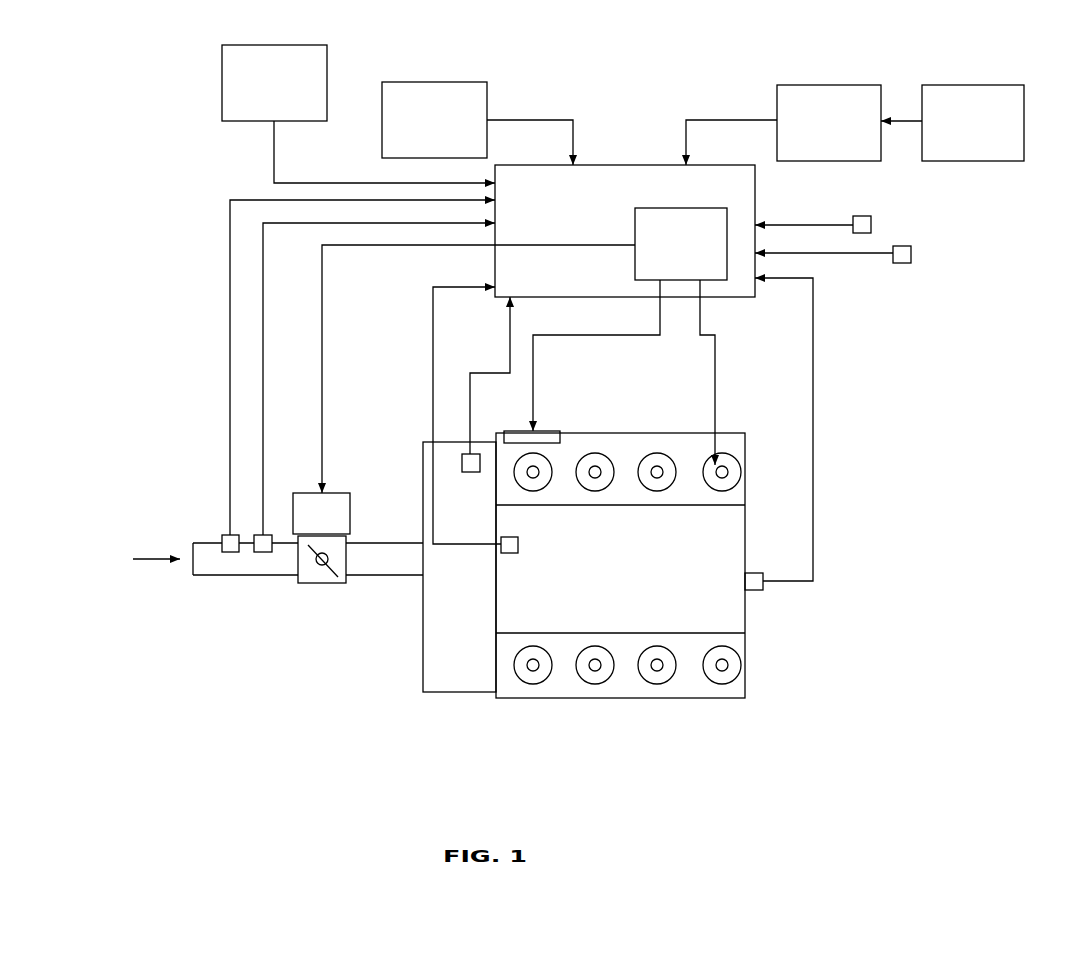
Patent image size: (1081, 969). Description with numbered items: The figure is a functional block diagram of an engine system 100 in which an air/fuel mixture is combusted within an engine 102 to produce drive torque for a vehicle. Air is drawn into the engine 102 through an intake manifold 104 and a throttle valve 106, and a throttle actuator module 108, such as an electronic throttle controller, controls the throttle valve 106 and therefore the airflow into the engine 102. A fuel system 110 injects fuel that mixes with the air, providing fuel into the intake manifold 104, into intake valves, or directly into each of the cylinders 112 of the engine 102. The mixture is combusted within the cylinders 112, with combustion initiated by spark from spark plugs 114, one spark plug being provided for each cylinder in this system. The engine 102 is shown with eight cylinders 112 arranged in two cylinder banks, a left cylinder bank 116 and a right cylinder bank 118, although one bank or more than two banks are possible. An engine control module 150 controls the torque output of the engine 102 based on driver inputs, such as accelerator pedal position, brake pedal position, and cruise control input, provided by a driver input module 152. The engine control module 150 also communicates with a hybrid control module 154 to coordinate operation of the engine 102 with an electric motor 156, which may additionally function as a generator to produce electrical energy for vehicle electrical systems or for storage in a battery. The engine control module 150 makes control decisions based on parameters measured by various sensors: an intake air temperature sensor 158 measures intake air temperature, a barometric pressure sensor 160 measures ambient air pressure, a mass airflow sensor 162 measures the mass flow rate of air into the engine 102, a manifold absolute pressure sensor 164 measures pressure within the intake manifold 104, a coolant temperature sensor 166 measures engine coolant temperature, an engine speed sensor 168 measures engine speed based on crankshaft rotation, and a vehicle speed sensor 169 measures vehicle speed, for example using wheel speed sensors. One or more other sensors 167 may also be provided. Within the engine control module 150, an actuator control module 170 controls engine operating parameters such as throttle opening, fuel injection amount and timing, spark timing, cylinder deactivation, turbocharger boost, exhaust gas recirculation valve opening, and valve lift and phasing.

The engine system 100 is at (172, 152).
The engine 102 is at (636, 396).
The intake manifold 104 is at (458, 692).
The throttle valve 106 is at (322, 583).
The throttle actuator module 108 is at (337, 493).
The fuel system 110 is at (555, 431).
The cylinders 112 is at (536, 491).
The spark plugs 114 is at (527, 474).
The left cylinder bank 116 is at (560, 492).
The right cylinder bank 118 is at (562, 648).
The engine control module 150 is at (645, 165).
The driver input module 152 is at (437, 82).
The hybrid control module 154 is at (832, 85).
The electric motor 156 is at (975, 85).
The intake air temperature sensor 158 is at (230, 552).
The barometric pressure sensor 160 is at (862, 216).
The mass airflow sensor 162 is at (263, 552).
The manifold absolute pressure sensor 164 is at (480, 450).
The coolant temperature sensor 166 is at (504, 555).
The other sensors 167 is at (222, 89).
The engine speed sensor 168 is at (745, 580).
The vehicle speed sensor 169 is at (902, 246).
The actuator control module 170 is at (713, 283).